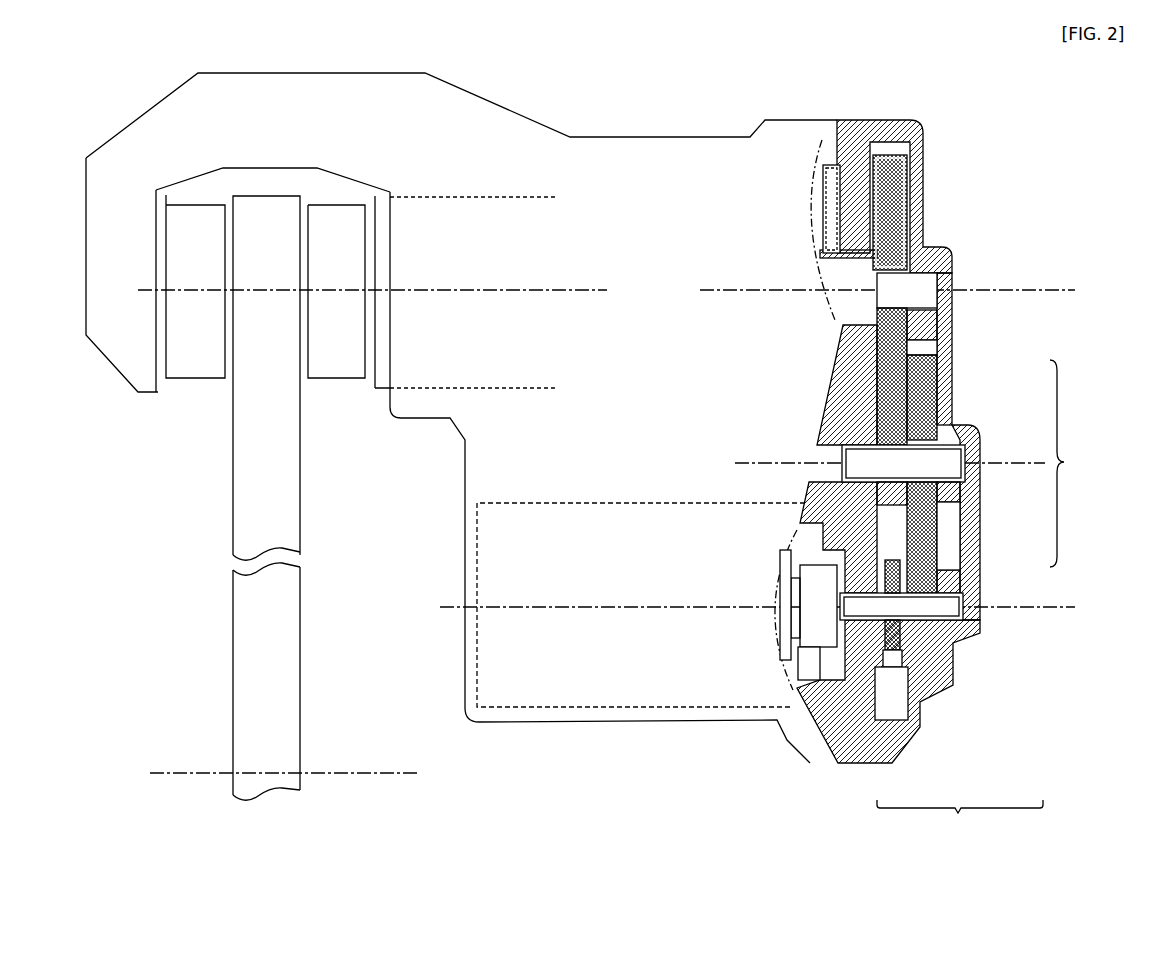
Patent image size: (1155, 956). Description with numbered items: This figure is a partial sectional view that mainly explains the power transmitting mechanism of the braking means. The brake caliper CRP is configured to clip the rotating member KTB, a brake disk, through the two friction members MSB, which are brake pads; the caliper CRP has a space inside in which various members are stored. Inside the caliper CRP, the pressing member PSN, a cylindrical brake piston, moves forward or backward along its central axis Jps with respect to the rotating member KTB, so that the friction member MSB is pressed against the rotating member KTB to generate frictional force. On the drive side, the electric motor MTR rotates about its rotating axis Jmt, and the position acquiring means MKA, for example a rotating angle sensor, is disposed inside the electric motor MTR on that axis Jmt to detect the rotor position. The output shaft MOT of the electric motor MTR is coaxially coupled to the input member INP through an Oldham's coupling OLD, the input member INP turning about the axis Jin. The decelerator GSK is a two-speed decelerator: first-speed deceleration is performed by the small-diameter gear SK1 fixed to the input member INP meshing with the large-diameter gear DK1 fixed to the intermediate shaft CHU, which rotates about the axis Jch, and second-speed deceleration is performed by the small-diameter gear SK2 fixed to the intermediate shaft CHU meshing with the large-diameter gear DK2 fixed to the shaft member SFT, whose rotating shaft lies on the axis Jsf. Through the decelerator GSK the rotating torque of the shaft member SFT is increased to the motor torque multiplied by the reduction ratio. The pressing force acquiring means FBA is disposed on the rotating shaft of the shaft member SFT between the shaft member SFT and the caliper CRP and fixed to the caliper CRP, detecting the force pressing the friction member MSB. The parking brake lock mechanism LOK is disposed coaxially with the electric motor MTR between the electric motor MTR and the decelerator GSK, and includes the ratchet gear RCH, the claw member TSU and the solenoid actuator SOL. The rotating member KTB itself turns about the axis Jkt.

The friction member MSB is at (193, 381).
The rotating member KTB is at (300, 520).
The pressing member PSN is at (505, 389).
The central axis Jps is at (445, 290).
The shaft axis Jsf is at (1062, 290).
The clutch axis Jch is at (748, 463).
The rotating axis Jmt is at (545, 607).
The input axis Jin is at (1062, 607).
The knob axis Jkt is at (330, 773).
The electric motor MTR is at (572, 708).
The brake caliper CRP is at (923, 185).
The pressing force acquiring means FBA is at (822, 160).
The shaft member SFT is at (937, 284).
The large-diameter gear DK2 is at (952, 378).
The small-diameter gear SK2 is at (937, 406).
The intermediate shaft CHU is at (965, 470).
The decelerator GSK is at (1081, 463).
The large-diameter gear DK1 is at (940, 510).
The small-diameter gear SK1 is at (940, 556).
The input member INP is at (963, 612).
The claw member TSU is at (905, 665).
The solenoid actuator SOL is at (893, 722).
The ratchet gear RCH is at (938, 652).
The parking brake lock mechanism LOK is at (960, 819).
The output shaft MOT is at (803, 660).
The position acquiring means MKA is at (787, 652).
The Oldham's coupling OLD is at (812, 692).